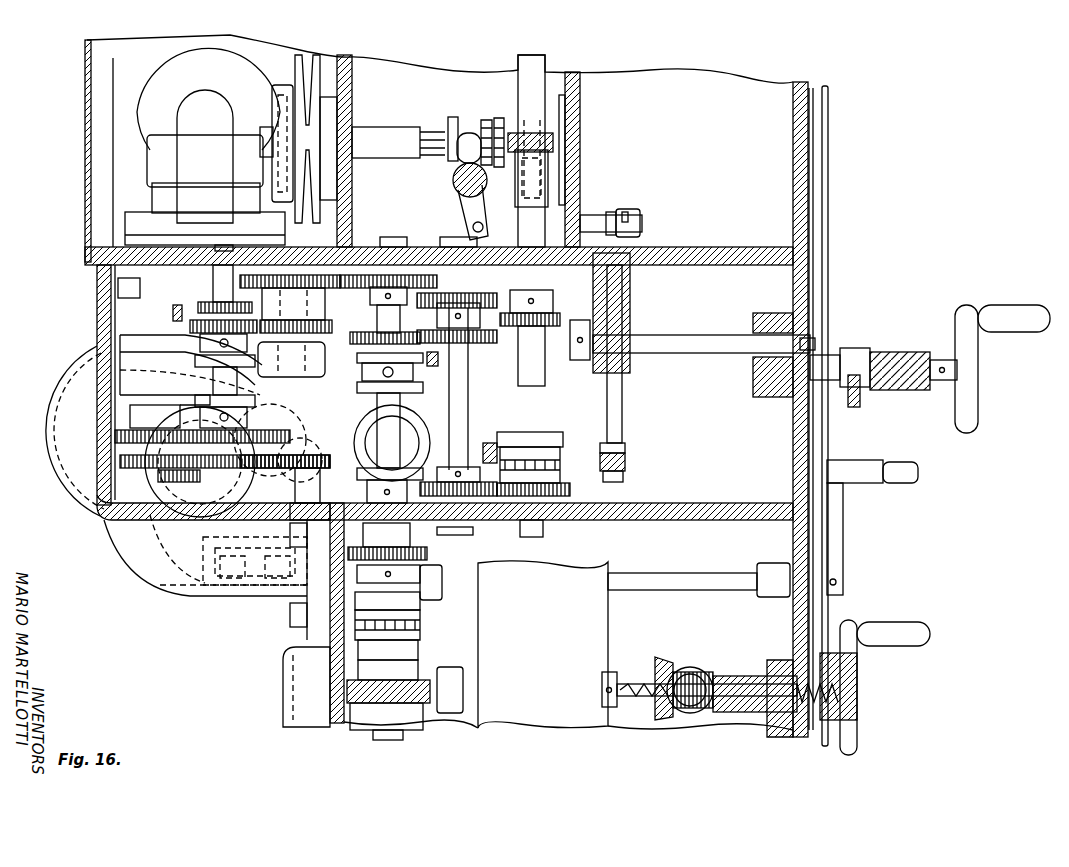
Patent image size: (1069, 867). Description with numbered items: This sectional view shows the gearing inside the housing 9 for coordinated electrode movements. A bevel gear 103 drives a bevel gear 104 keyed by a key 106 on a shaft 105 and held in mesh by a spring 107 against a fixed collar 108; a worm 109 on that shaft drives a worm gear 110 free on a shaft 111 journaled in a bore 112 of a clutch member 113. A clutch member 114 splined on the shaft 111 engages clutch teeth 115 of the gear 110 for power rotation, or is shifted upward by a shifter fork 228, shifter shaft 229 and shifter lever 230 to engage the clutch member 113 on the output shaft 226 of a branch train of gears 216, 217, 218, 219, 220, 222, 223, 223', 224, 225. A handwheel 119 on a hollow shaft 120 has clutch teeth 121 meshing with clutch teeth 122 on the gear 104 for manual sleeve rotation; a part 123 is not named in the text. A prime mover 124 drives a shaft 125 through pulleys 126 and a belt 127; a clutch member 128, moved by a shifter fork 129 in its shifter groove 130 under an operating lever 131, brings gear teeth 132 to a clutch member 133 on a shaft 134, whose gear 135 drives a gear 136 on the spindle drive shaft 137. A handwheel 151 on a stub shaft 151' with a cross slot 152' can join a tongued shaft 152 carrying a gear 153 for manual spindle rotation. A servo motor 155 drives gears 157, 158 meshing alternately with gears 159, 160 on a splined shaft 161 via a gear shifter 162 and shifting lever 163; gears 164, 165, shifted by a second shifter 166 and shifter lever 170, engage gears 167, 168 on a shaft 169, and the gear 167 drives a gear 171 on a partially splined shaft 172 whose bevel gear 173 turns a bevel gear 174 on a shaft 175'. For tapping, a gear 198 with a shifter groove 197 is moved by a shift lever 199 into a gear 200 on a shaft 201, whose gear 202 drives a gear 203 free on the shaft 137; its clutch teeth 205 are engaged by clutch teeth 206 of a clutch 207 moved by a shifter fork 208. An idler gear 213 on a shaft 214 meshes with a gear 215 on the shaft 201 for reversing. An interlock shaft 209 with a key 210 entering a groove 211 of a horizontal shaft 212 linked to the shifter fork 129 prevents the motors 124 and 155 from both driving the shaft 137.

The housing 9 is at (830, 620).
The bevel gear 103 is at (700, 672).
The second bevel gear 104 is at (667, 660).
The shaft 105 is at (648, 684).
The key 106 is at (692, 668).
The spring 107 is at (628, 680).
The fixed collar 108 is at (609, 708).
The worm 109 is at (360, 720).
The worm gear 110 is at (440, 714).
The shaft 111 is at (388, 742).
The bore 112 is at (422, 612).
The clutch member 113 is at (420, 606).
The clutch member 114 is at (420, 670).
The clutch teeth 115 is at (330, 676).
The handwheel 119 is at (857, 748).
The hollow shaft 120 is at (760, 712).
The clutch teeth 121 is at (702, 710).
The clutch teeth 122 is at (684, 712).
The nut 123 is at (858, 668).
The second prime mover 124 is at (135, 92).
The shaft 125 is at (385, 125).
The pulleys 126 is at (312, 80).
The belt 127 is at (283, 90).
The clutch member 128 is at (452, 115).
The shifter fork 129 is at (454, 174).
The shifter groove 130 is at (468, 130).
The clutch selector or operating lever 131 is at (464, 200).
The gear teeth 132 is at (487, 118).
The clutch member 133 is at (500, 116).
The shaft 134 is at (555, 140).
The gear 135 is at (560, 112).
The gear 136 is at (549, 160).
The shaft 137 is at (540, 58).
The handwheel 151 is at (930, 369).
The stub shaft 151' is at (844, 360).
The shaft 152 is at (701, 323).
The cross slot 152' is at (838, 310).
The gear 153 is at (590, 355).
The servo motor 155 is at (100, 300).
The gear 157 is at (122, 460).
The gear 158 is at (190, 480).
The gear 159 is at (185, 470).
The gear 160 is at (158, 476).
The splined shaft 161 is at (120, 342).
The gear shifter 162 is at (120, 372).
The shifting lever 163 is at (120, 400).
The gear 164 is at (210, 262).
The gear 165 is at (212, 300).
The second shifter 166 is at (196, 328).
The gear 167 is at (270, 274).
The gear 168 is at (308, 332).
The shaft 169 is at (375, 240).
The shifter lever 170 is at (178, 300).
The gear 171 is at (440, 240).
The partially splined shaft 172 is at (365, 385).
The bevel gear 173 is at (360, 470).
The second bevel gear 174 is at (405, 440).
The shaft 175' is at (378, 437).
The shifter groove 197 is at (460, 440).
The gear 198 is at (352, 332).
The shift lever 199 is at (440, 359).
The gear 200 is at (495, 336).
The shaft 201 is at (470, 390).
The gear 202 is at (490, 498).
The gear 203 is at (572, 490).
The clutch teeth 205 is at (626, 464).
The clutch teeth 206 is at (626, 446).
The shiftable clutch 207 is at (530, 447).
The shifter fork 208 is at (488, 443).
The vertically slidable shaft 209 is at (624, 420).
The key member 210 is at (635, 212).
The groove 211 is at (611, 212).
The horizontally disposed shaft 212 is at (600, 214).
The idler gear 213 is at (540, 300).
The shaft 214 is at (440, 282).
The gear 215 is at (520, 290).
The gear 216 is at (280, 470).
The gear 217 is at (290, 440).
The gear 218 is at (240, 430).
The gear 219 is at (150, 520).
The gear 220 is at (56, 440).
The gear 222 is at (185, 520).
The gear 223 is at (243, 586).
The gear 223' is at (255, 586).
The gear 224 is at (300, 627).
The gear 225 is at (428, 553).
The output shaft 226 is at (420, 576).
The shifter fork 228 is at (420, 650).
The shifter shaft 229 is at (718, 573).
The shifter lever 230 is at (843, 548).